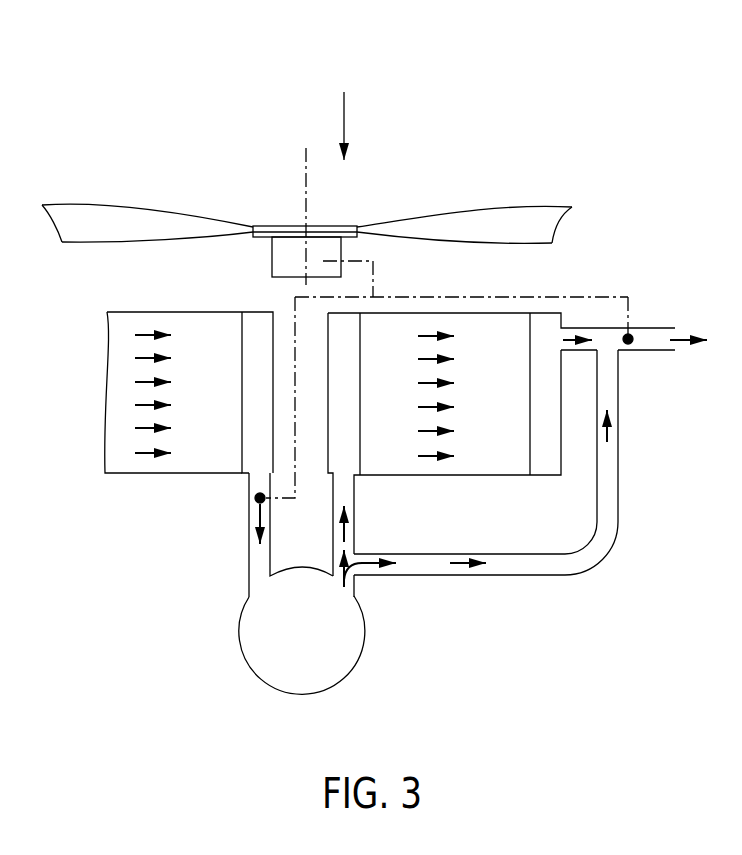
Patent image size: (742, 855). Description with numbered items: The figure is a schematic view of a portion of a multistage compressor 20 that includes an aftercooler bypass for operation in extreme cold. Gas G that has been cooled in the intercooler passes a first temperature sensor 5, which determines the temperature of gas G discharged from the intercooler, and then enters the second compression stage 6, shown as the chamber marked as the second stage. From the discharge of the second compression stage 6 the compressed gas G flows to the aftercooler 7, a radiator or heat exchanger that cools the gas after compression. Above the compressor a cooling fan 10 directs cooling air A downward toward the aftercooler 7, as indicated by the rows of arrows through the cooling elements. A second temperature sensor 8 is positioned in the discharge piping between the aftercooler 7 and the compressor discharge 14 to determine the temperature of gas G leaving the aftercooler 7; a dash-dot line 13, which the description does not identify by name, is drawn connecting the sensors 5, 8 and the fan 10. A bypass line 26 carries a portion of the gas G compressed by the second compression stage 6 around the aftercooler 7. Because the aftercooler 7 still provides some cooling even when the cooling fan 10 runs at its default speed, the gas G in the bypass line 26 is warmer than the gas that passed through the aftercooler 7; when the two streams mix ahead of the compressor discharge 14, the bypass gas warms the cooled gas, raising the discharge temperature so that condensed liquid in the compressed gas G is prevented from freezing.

The multistage compressor 20 is at (578, 87).
The cooling fan 10 is at (510, 205).
The control line 13 is at (595, 293).
The aftercooler 7 is at (438, 475).
The second temperature sensor 8 is at (630, 345).
The compressor discharge 14 is at (680, 346).
The bypass line 26 is at (598, 535).
The first temperature sensor 5 is at (255, 500).
The second compression stage 6 is at (250, 668).
The cooling air A is at (344, 122).
The gas G is at (457, 563).